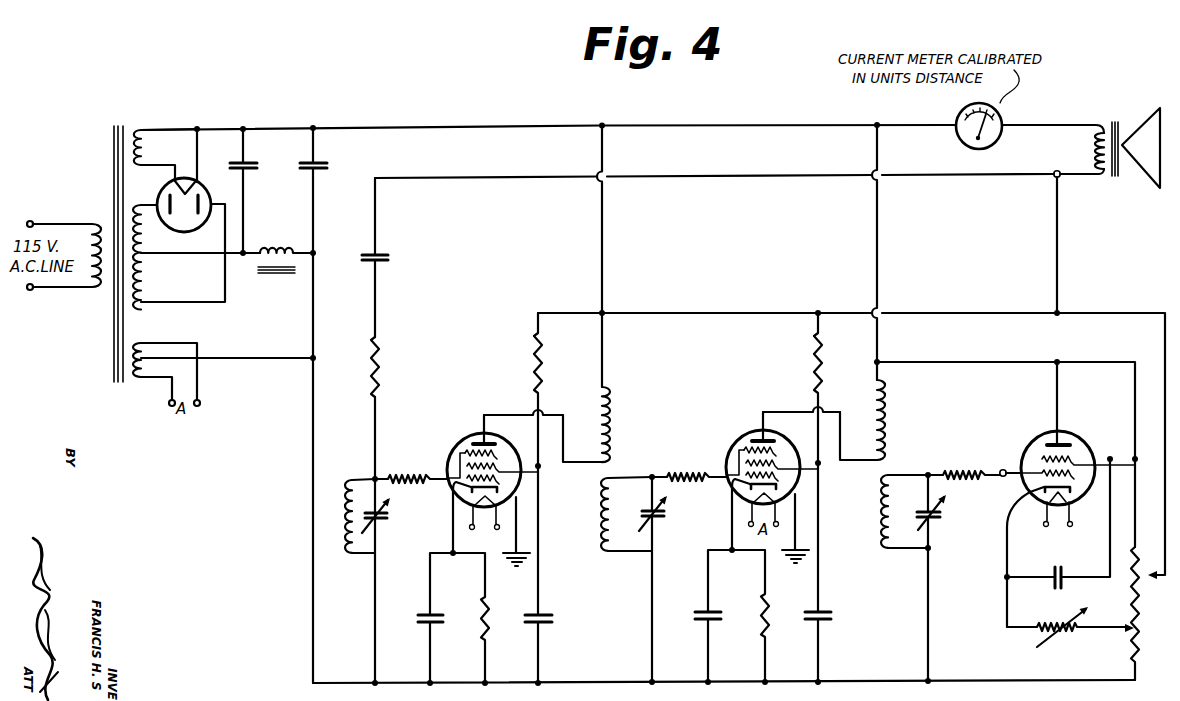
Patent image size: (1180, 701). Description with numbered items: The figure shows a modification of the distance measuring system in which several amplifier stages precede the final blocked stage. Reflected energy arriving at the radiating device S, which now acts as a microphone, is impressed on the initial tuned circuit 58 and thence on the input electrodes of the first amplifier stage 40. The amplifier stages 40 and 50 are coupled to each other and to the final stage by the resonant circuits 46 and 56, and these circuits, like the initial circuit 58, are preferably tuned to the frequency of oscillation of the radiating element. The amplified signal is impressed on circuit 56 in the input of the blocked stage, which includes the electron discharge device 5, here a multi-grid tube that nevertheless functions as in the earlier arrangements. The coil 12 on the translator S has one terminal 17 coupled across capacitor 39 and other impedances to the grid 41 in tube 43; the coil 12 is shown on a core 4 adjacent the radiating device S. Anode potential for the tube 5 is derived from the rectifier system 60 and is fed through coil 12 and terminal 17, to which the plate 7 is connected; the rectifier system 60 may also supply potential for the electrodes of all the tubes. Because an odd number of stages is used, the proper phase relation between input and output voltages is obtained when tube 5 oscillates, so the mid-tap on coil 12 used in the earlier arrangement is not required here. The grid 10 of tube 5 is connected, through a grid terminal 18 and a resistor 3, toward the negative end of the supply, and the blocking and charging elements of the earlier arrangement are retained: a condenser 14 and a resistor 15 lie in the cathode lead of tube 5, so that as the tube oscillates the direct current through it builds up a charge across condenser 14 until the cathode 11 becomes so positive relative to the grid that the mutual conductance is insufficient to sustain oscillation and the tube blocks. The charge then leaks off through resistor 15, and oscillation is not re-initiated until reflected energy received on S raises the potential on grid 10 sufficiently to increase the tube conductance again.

The rectifier system 60 is at (186, 232).
The capacitor 39 is at (380, 262).
The initial circuit 58 is at (362, 490).
The amplifier stage 40 is at (408, 466).
The tube 43 is at (453, 447).
The grid 41 is at (465, 485).
The resonant circuit 46 is at (630, 495).
The amplifier stage 50 is at (700, 464).
The resonant circuit 56 is at (903, 493).
The resistor 3 is at (962, 481).
The grid terminal 18 is at (1004, 470).
The electron discharge device 5 is at (1087, 440).
The plate 7 is at (1047, 445).
The grid 10 is at (1036, 479).
The cathode 11 is at (1073, 488).
The condenser 14 is at (1062, 567).
The resistor 15 is at (1060, 633).
The coil 12 is at (1065, 145).
The terminal 17 is at (1053, 178).
The transformer core 4 is at (1107, 177).
The radiator S is at (1147, 177).